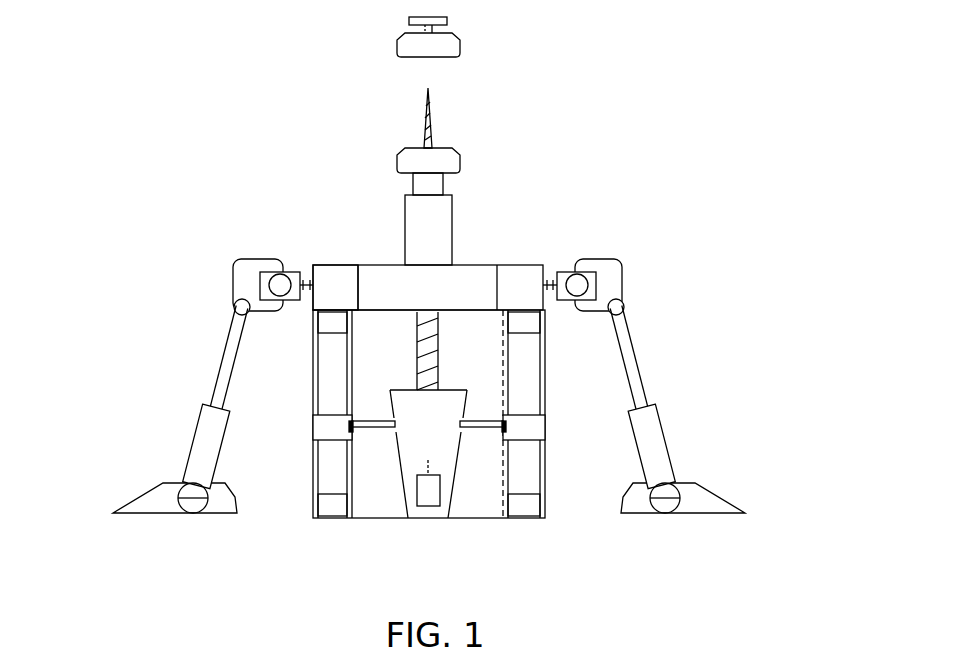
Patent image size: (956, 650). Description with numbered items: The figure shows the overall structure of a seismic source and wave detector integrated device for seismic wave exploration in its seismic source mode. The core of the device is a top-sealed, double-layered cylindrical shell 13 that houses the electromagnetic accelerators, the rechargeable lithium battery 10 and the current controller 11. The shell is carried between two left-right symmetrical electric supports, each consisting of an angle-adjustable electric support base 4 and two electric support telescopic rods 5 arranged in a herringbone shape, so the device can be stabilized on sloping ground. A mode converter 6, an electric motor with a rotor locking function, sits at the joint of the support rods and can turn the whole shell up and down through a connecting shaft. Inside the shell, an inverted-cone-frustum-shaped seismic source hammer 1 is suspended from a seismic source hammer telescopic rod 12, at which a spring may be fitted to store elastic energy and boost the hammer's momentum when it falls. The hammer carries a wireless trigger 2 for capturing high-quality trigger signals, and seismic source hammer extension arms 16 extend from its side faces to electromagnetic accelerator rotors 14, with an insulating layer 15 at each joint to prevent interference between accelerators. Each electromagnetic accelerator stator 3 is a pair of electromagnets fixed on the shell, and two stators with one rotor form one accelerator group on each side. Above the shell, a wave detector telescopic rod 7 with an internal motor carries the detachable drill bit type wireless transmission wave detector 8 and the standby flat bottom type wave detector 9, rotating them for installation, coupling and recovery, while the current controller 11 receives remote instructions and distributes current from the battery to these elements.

The inverted-cone-frustum-shaped seismic source hammer 1 is at (407, 500).
The wireless trigger 2 is at (428, 495).
The electromagnetic accelerator stator 3 is at (527, 322).
The electric support base 4 is at (703, 502).
The electric support telescopic rod 5 is at (645, 430).
The mode converter 6 is at (588, 285).
The wave detector telescopic rod 7 is at (435, 228).
The drill bit type wireless transmission wave detector 8 is at (445, 163).
The standby flat bottom type wave detector 9 is at (425, 46).
The rechargeable lithium battery 10 is at (397, 287).
The current controller 11 is at (338, 288).
The seismic source hammer telescopic rod 12 is at (425, 352).
The cylindrical shell 13 is at (313, 390).
The electromagnetic accelerator rotor 14 is at (332, 428).
The insulating layer 15 is at (348, 433).
The seismic source hammer extension arm 16 is at (367, 428).